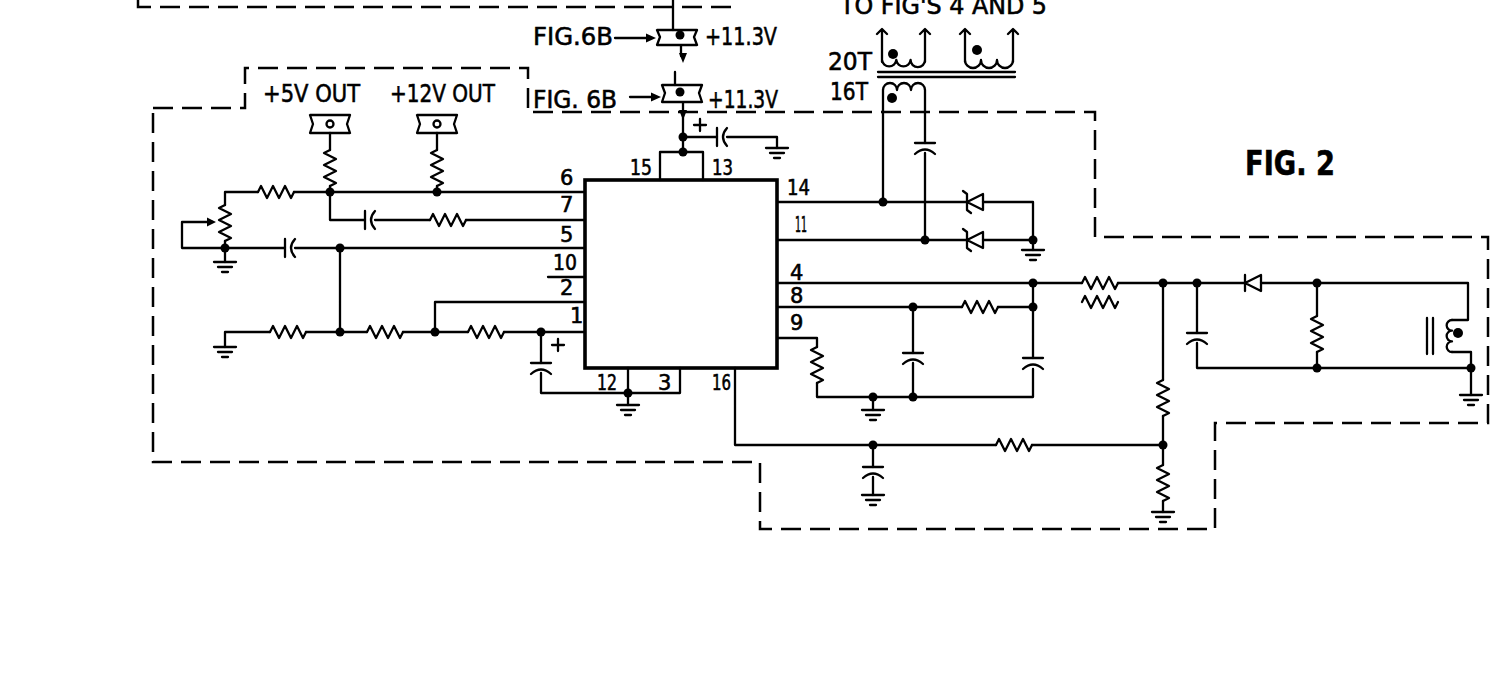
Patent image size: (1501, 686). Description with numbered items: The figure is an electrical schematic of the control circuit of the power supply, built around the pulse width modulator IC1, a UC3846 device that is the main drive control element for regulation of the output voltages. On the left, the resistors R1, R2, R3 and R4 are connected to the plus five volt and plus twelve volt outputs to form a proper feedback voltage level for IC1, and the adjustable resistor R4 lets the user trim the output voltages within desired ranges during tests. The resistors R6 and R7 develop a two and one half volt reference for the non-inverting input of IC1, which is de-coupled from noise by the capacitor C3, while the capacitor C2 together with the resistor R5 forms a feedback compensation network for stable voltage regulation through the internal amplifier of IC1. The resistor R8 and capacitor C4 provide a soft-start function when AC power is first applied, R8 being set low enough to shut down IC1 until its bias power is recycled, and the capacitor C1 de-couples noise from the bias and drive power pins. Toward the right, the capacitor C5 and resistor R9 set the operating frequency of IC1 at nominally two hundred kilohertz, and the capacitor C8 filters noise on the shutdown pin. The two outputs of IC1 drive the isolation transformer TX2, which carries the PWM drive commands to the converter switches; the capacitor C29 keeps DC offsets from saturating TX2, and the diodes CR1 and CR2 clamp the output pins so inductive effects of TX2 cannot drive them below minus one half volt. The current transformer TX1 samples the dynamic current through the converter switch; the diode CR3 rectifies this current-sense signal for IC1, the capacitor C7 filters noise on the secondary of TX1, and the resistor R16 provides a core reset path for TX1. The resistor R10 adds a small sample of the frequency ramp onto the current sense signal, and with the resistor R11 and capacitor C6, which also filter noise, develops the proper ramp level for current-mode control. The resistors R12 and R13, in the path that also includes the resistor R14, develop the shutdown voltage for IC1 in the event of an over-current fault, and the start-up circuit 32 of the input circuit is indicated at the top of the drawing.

The start-up circuit 32 is at (523, 0).
The resistor R1 is at (348, 167).
The resistor R2 is at (456, 167).
The resistor R3 is at (276, 177).
The adjustable resistor R4 is at (202, 212).
The resistor R5 is at (448, 232).
The resistor R6 is at (288, 316).
The resistor R7 is at (386, 316).
The resistor R8 is at (486, 348).
The resistor R9 is at (852, 356).
The resistor R10 is at (985, 329).
The resistor R11 is at (1101, 268).
The resistor R12 is at (1141, 398).
The resistor R13 is at (1141, 483).
The resistor R14 is at (1012, 431).
The resistor R16 is at (1342, 333).
The capacitor C1 is at (733, 147).
The capacitor C2 is at (387, 231).
The capacitor C3 is at (291, 230).
The capacitor C4 is at (554, 376).
The capacitor C5 is at (934, 370).
The capacitor C6 is at (1053, 354).
The capacitor C7 is at (1215, 339).
The capacitor C8 is at (889, 463).
The capacitor C29 is at (951, 154).
The diode CR1 is at (996, 210).
The diode CR2 is at (990, 254).
The diode CR3 is at (1254, 268).
The pulse width modulator integrated circuit IC1 is at (681, 275).
The current transformer TX1 is at (1424, 300).
The drive transformer TX2 is at (1010, 66).